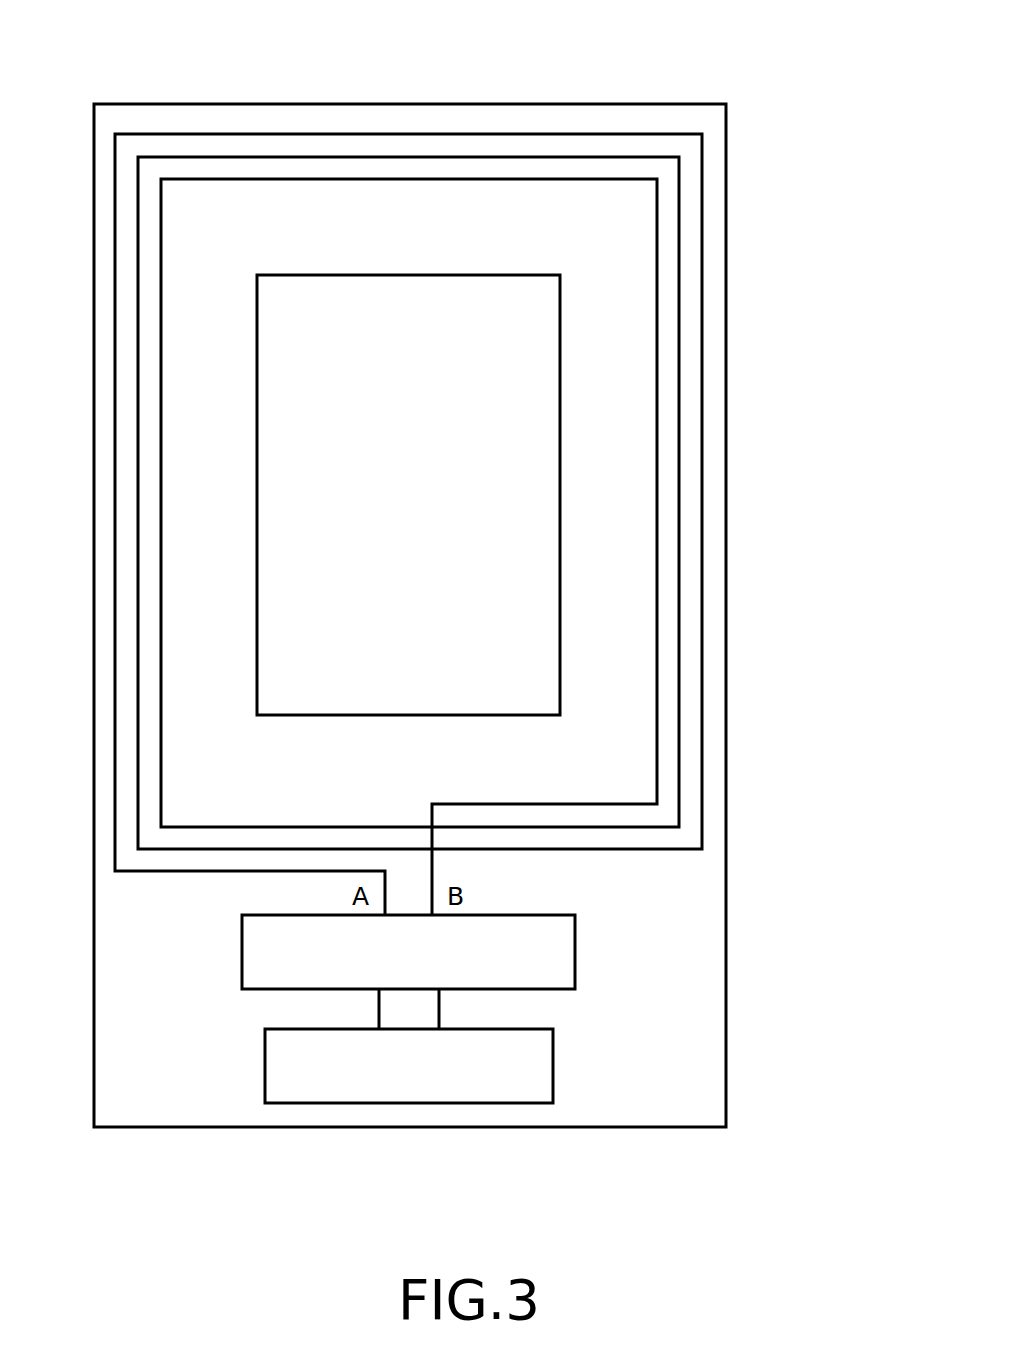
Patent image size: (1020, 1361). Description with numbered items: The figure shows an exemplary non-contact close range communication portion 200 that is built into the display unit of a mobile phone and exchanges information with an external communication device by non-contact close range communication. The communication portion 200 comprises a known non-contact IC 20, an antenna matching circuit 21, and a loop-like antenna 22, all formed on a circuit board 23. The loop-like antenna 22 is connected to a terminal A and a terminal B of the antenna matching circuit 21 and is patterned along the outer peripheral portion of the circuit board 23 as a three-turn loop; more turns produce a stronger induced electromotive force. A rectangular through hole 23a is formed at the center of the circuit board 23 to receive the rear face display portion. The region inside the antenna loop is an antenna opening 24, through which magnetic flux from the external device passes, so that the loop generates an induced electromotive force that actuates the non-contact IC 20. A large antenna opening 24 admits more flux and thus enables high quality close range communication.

The non-contact close range communication portion 200 is at (212, 90).
The circuit board 23 is at (585, 103).
The loop-like antenna 22 is at (704, 207).
The through hole 23a is at (560, 548).
The antenna opening 24 is at (627, 403).
The antenna matching circuit 21 is at (576, 935).
The non-contact IC 20 is at (554, 1045).